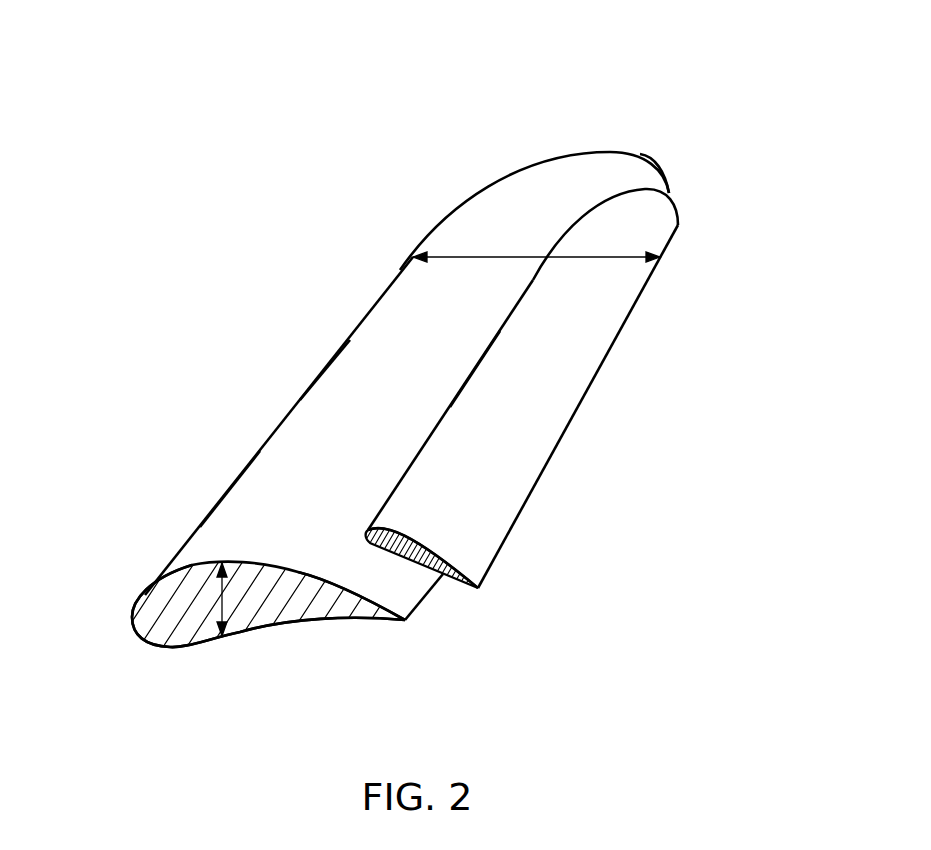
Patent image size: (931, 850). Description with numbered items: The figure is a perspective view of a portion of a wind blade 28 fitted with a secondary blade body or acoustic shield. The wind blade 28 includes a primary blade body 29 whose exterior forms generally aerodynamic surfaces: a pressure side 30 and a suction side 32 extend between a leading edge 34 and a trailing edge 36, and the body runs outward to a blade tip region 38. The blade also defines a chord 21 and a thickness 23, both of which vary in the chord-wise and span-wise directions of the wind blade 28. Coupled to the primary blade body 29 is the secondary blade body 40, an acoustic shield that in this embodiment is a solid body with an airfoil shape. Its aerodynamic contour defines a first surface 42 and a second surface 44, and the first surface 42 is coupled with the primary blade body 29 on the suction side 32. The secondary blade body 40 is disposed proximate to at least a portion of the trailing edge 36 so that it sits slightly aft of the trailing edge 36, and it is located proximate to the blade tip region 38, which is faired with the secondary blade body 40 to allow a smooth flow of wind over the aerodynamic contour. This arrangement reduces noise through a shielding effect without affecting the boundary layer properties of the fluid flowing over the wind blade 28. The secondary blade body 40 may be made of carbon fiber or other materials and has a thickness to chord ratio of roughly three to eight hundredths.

The wind blade 28 is at (740, 78).
The chord 21 is at (487, 257).
The thickness 23 is at (228, 597).
The primary blade body 29 is at (135, 609).
The pressure side 30 is at (347, 637).
The suction side 32 is at (384, 345).
The leading edge 34 is at (293, 400).
The trailing edge 36 is at (407, 620).
The blade tip region 38 is at (660, 162).
The secondary blade body 40 is at (380, 549).
The first surface 42 is at (457, 583).
The second surface 44 is at (568, 407).